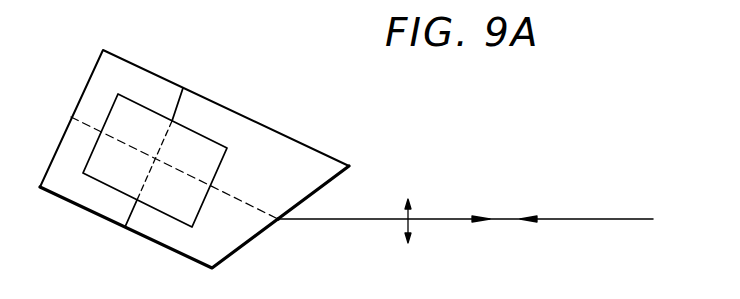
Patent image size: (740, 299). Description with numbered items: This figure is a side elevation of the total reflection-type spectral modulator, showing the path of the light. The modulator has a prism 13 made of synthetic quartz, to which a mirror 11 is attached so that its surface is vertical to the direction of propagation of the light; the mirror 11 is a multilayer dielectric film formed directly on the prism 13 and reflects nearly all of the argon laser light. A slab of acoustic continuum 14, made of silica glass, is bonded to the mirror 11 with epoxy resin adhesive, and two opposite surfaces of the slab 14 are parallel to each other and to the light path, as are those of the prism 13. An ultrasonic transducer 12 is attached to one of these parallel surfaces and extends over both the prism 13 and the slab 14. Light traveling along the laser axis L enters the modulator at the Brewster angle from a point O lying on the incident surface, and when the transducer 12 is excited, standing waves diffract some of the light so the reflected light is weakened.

The mirror 11 is at (173, 103).
The ultrasonic transducer 12 is at (200, 145).
The prism 13 is at (284, 148).
The slab of acoustic continuum 14 is at (107, 68).
The optical axis / light beam L is at (575, 219).
The point O is at (278, 219).